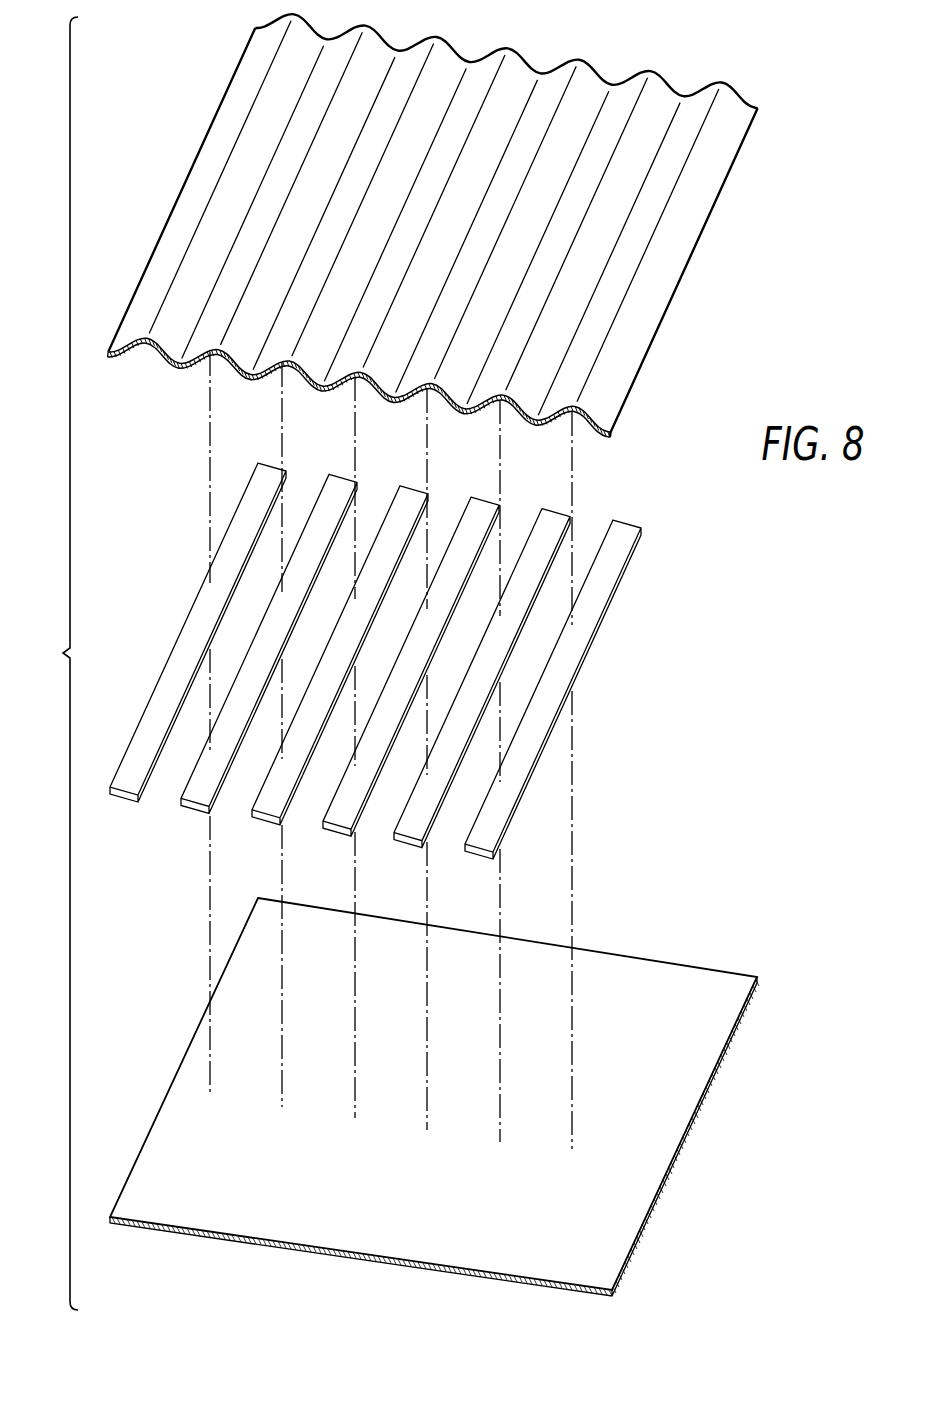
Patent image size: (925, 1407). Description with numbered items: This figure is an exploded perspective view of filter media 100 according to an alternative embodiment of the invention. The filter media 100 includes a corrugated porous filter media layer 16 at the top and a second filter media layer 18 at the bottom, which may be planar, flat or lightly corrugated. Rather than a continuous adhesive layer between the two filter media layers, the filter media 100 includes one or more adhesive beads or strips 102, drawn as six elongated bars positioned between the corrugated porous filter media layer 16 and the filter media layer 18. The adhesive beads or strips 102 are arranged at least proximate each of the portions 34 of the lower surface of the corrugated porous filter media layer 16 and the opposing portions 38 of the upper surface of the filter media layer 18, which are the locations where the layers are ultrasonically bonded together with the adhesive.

The corrugated porous filter media layer 16 is at (667, 64).
The filter media layer 18 is at (643, 946).
The portions of the lower surface of the corrugated porous filter media layer 34 is at (536, 431).
The portions of the upper surface of the filter media layer 38 is at (569, 1146).
The filter media 100 is at (51, 663).
The adhesive beads or strips 102 is at (628, 597).